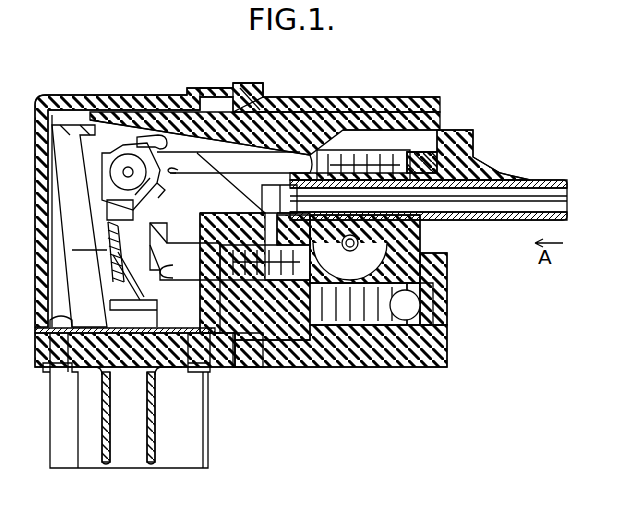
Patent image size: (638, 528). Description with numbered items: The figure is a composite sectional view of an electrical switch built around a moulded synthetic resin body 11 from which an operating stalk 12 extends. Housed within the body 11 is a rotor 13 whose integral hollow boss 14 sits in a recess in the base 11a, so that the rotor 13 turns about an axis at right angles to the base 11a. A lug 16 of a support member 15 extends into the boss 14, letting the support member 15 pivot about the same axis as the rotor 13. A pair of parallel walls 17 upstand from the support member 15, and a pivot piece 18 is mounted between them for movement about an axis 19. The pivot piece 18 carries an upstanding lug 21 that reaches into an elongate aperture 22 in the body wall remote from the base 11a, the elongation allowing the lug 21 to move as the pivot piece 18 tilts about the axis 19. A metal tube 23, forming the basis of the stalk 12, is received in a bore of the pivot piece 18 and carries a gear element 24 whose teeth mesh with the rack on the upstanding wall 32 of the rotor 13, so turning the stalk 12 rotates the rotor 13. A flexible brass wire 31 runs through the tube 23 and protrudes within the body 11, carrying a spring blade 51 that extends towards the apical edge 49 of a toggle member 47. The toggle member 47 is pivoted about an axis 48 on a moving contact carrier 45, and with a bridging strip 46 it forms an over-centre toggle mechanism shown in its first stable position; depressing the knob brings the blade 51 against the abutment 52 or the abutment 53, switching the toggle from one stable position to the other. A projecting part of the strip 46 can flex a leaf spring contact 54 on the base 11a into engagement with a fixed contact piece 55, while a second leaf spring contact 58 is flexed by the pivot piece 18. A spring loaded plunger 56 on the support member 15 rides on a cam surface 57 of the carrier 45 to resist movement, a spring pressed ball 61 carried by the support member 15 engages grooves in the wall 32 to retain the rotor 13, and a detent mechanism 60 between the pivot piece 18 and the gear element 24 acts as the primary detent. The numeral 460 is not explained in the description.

The body 11 is at (68, 96).
The base 11a is at (395, 345).
The operating stalk 12 is at (530, 171).
The rotor 13 is at (348, 335).
The boss 14 is at (270, 345).
The support member 15 is at (292, 320).
The lug 16 is at (247, 343).
The parallel walls 17 is at (392, 290).
The pivot piece 18 is at (290, 128).
The axis 19 is at (372, 258).
The upstanding lug 21 is at (250, 90).
The elongate aperture 22 is at (220, 96).
The metal tube 23 is at (380, 163).
The gear element 24 is at (458, 140).
The flexible brass wire 31 is at (553, 205).
The upstanding wall 32 is at (430, 310).
The moving contact carrier 45 is at (118, 280).
The bridging strip 46 is at (130, 245).
The chamber 460 is at (80, 258).
The toggle member 47 is at (108, 190).
The axis 48 is at (128, 170).
The apical edge 49 is at (160, 185).
The spring blade 51 is at (240, 167).
The abutment 52 is at (162, 140).
The abutment 53 is at (108, 213).
The leaf spring contact 54 is at (163, 335).
The fixed contact piece 55 is at (196, 345).
The spring loaded plunger 56 is at (205, 275).
The cam surface 57 is at (168, 242).
The second leaf spring contact 58 is at (62, 157).
The detent mechanism 60 is at (422, 160).
The spring pressed ball 61 is at (428, 326).